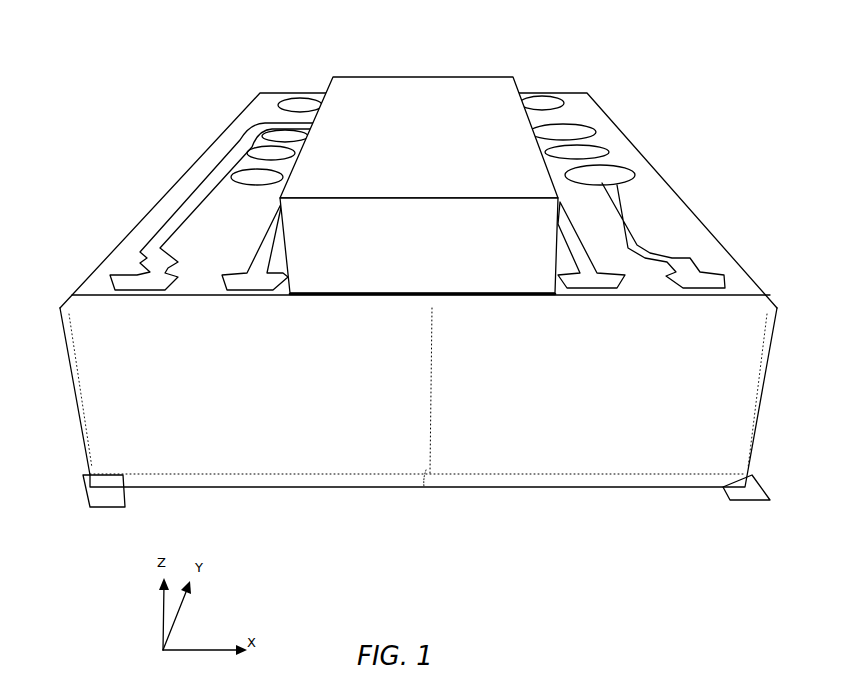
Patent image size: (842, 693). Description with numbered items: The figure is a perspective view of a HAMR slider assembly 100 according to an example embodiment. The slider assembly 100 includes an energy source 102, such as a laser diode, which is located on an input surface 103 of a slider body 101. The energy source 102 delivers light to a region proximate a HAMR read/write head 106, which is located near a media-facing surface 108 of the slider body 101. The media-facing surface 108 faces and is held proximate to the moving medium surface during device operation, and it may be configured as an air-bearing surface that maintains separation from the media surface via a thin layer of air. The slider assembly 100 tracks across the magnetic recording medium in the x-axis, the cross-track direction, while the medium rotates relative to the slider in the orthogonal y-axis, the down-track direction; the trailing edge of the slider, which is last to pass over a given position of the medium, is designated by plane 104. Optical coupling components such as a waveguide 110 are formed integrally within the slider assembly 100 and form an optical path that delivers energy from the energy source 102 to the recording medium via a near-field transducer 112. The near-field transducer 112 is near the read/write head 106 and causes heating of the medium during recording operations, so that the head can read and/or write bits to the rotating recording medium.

The HAMR slider assembly 100 is at (597, 44).
The slider body 101 is at (677, 192).
The energy source 102 is at (348, 77).
The input surface 103 is at (173, 198).
The plane 104 is at (110, 508).
The HAMR read/write head 106 is at (423, 490).
The media-facing surface 108 is at (758, 503).
The waveguide 110 is at (428, 382).
The near-field transducer 112 is at (427, 473).